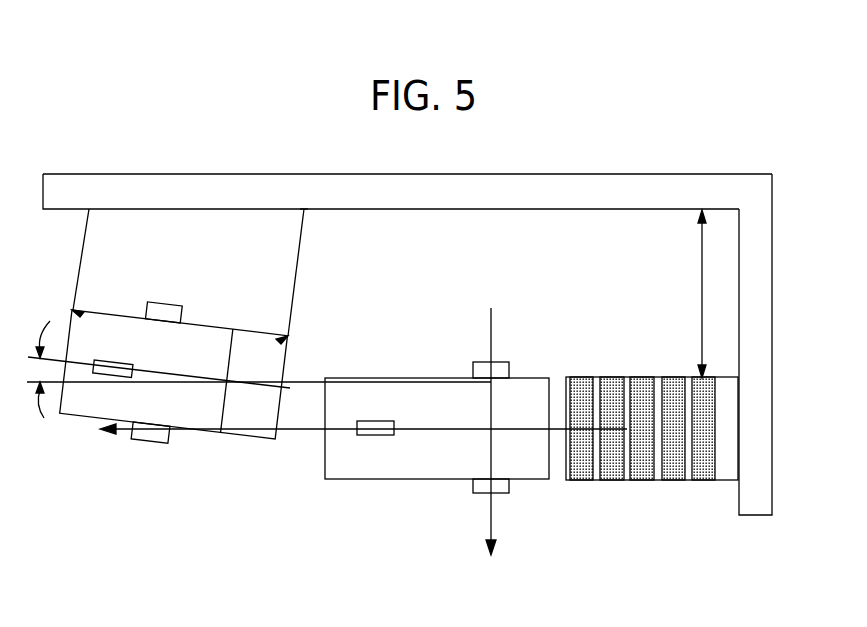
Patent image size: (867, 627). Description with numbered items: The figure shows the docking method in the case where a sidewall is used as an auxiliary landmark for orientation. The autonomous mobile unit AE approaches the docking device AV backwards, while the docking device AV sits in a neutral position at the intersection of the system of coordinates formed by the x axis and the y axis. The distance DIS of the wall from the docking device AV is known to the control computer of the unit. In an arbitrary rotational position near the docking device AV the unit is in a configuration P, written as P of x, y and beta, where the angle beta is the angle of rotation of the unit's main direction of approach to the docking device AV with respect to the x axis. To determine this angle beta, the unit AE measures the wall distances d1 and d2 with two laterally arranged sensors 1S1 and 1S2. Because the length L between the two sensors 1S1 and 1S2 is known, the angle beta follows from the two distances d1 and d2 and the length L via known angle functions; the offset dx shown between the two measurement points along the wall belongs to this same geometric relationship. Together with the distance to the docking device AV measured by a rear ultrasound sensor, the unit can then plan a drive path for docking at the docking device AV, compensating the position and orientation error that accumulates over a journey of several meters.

The length between the two sensors L is at (407, 344).
The wall distance d1 is at (91, 259).
The wall distance d2 is at (307, 272).
The longitudinal offset dx is at (319, 221).
The autonomous mobile unit AE is at (174, 401).
The sensor 1S1 is at (80, 313).
The sensor 1S2 is at (281, 341).
The angle of rotation beta is at (246, 369).
The x-axis of the system of coordinates x is at (362, 437).
The y-axis of the system of coordinates y is at (498, 437).
The configuration P(x,y,beta) P is at (428, 391).
The distance of the wall from the docking device DIS is at (701, 294).
The docking device AV is at (655, 463).